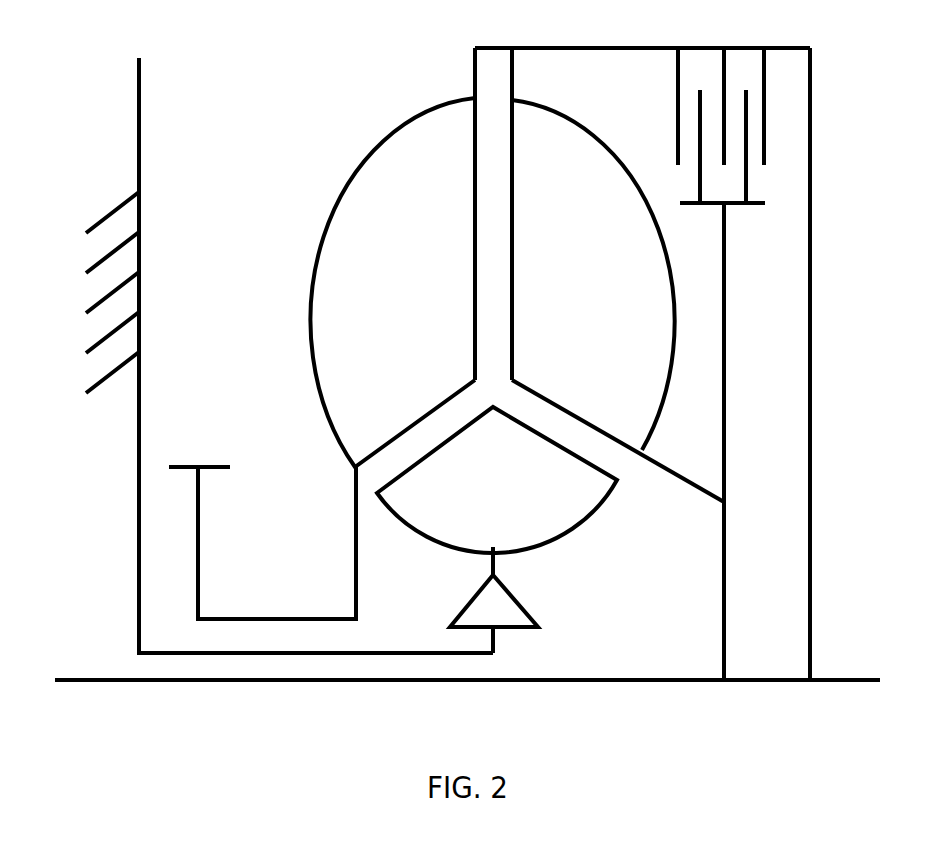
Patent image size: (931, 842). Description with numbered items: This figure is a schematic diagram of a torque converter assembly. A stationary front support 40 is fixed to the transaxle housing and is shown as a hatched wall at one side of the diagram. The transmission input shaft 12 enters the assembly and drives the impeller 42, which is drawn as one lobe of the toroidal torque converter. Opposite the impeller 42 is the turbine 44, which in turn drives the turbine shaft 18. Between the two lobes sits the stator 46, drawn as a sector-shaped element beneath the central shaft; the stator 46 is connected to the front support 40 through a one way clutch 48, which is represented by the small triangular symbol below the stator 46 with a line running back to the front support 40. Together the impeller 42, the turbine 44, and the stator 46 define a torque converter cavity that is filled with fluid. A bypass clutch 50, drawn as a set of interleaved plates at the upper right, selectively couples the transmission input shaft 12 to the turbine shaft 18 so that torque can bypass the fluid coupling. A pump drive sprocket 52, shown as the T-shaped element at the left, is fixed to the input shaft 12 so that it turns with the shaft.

The transmission input shaft 12 is at (832, 677).
The turbine shaft 18 is at (600, 677).
The stationary front support 40 is at (113, 208).
The impeller 42 is at (337, 203).
The turbine 44 is at (668, 357).
The stator 46 is at (450, 542).
The one way clutch 48 is at (525, 607).
The bypass clutch 50 is at (678, 125).
The pump drive sprocket 52 is at (180, 467).